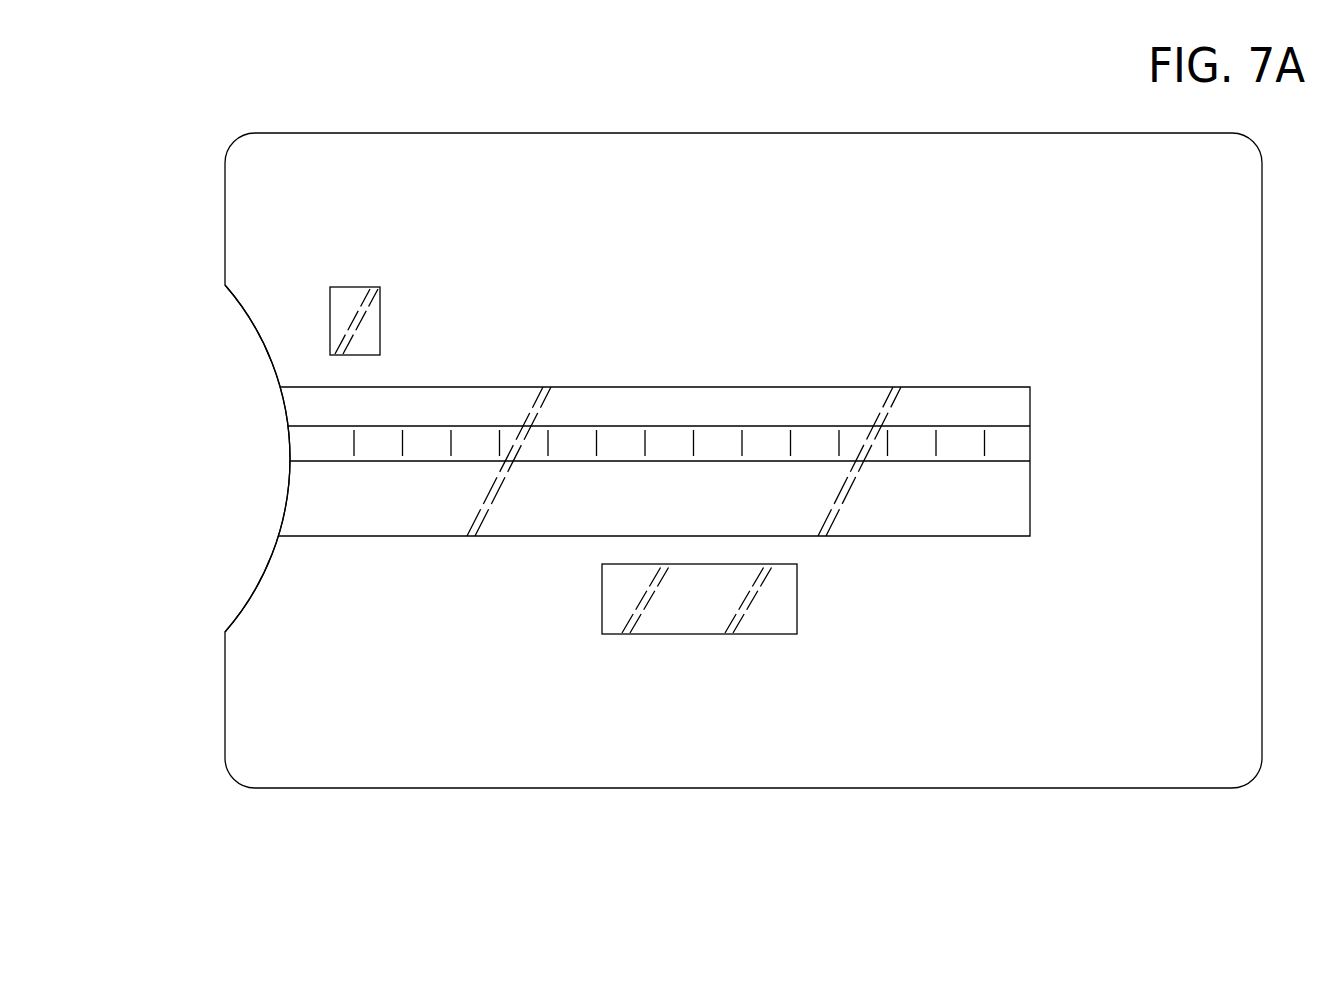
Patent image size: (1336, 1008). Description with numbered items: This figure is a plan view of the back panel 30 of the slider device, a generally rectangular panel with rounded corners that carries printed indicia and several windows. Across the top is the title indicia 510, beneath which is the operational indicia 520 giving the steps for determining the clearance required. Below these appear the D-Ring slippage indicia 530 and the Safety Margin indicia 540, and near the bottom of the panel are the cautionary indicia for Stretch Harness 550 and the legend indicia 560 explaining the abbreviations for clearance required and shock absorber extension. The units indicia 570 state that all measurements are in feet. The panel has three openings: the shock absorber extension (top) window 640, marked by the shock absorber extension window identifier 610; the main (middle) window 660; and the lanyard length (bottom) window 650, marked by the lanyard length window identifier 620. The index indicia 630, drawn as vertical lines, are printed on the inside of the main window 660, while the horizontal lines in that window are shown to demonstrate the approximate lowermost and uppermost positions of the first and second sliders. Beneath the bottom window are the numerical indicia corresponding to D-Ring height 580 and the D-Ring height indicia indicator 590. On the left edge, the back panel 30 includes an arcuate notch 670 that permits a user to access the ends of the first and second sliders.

The back panel 30 is at (767, 132).
The title indicia 510 is at (366, 162).
The operational indicia 520 is at (253, 214).
The D-Ring slippage indicia 530 is at (674, 343).
The Safety Margin indicia 540 is at (993, 341).
The cautionary indicia for Stretch Harness 550 is at (251, 676).
The legend indicia 560 is at (254, 745).
The units indicia 570 is at (1035, 581).
The numerical indicia corresponding to D-Ring height 580 is at (630, 658).
The D-Ring height indicia indicator 590 is at (860, 641).
The shock absorber extension window identifier 610 is at (441, 356).
The lanyard length window identifier 620 is at (832, 592).
The index indicia 630 is at (993, 443).
The shock absorber extension window 640 is at (346, 287).
The lanyard length window 650 is at (602, 592).
The main window 660 is at (422, 545).
The arcuate notch 670 is at (262, 344).